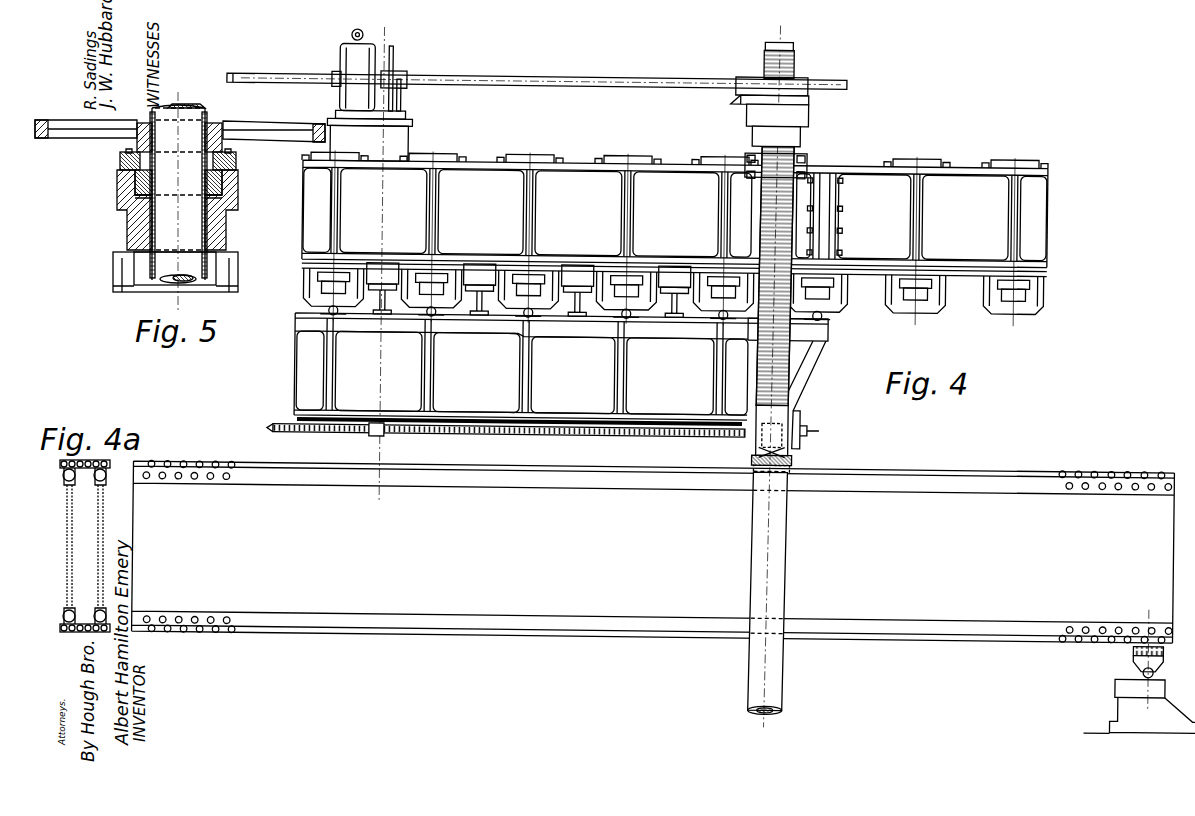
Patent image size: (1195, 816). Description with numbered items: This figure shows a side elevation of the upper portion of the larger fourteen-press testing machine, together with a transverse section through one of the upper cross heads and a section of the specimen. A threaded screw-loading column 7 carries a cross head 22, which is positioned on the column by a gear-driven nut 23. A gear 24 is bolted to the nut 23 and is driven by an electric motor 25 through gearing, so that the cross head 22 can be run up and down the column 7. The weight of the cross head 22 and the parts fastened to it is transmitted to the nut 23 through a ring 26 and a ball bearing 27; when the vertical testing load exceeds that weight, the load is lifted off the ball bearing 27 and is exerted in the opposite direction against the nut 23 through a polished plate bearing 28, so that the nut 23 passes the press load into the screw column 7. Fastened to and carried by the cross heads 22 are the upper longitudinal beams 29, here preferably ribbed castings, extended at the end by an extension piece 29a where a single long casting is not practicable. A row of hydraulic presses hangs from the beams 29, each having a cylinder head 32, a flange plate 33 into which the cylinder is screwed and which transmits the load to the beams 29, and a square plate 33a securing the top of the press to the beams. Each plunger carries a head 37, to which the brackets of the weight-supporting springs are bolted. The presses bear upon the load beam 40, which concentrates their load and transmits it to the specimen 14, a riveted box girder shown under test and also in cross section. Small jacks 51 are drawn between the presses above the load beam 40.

In FIG. 4, the column 7 is at (789, 511).
In FIG. 5, the column 7 is at (178, 202).
In FIG. 4, the specimen 14 is at (663, 597).
In FIG. 4A, the specimen 14 is at (100, 557).
In FIG. 4, the cross head 22 is at (770, 110).
In FIG. 5, the cross head 22 is at (226, 230).
In FIG. 5, the nut 23 is at (222, 186).
In FIG. 5, the gear 24 is at (240, 124).
In FIG. 4, the electric motor 25 is at (368, 47).
In FIG. 5, the ring 26 is at (216, 160).
In FIG. 5, the ball bearing 27 is at (226, 172).
In FIG. 5, the polished plate bearing 28 is at (214, 198).
In FIG. 4, the longitudinal beam 29 is at (674, 239).
In FIG. 4, the extension piece 29a is at (942, 241).
In FIG. 4, the cylinder head 32 is at (633, 157).
In FIG. 4, the flange plate 33 is at (1052, 265).
In FIG. 4, the square plate 33a is at (847, 159).
In FIG. 4, the head 37 is at (920, 305).
In FIG. 4, the load beam 40 is at (547, 381).
In FIG. 4, the jack 51 is at (482, 295).